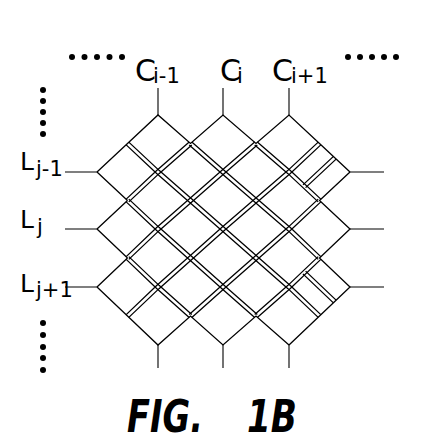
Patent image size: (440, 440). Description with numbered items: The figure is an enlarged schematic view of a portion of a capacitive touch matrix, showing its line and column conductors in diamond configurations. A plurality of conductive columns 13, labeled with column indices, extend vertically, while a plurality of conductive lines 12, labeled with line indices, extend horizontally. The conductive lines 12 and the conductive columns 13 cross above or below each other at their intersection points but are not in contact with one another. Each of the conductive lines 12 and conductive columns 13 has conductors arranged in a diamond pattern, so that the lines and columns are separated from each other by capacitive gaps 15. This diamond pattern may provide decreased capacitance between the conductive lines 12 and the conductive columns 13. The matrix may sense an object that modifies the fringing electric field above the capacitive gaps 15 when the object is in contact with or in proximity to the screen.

The conductive lines 12 is at (112, 215).
The conductive columns 13 is at (214, 123).
The capacitive gaps 15 is at (336, 154).